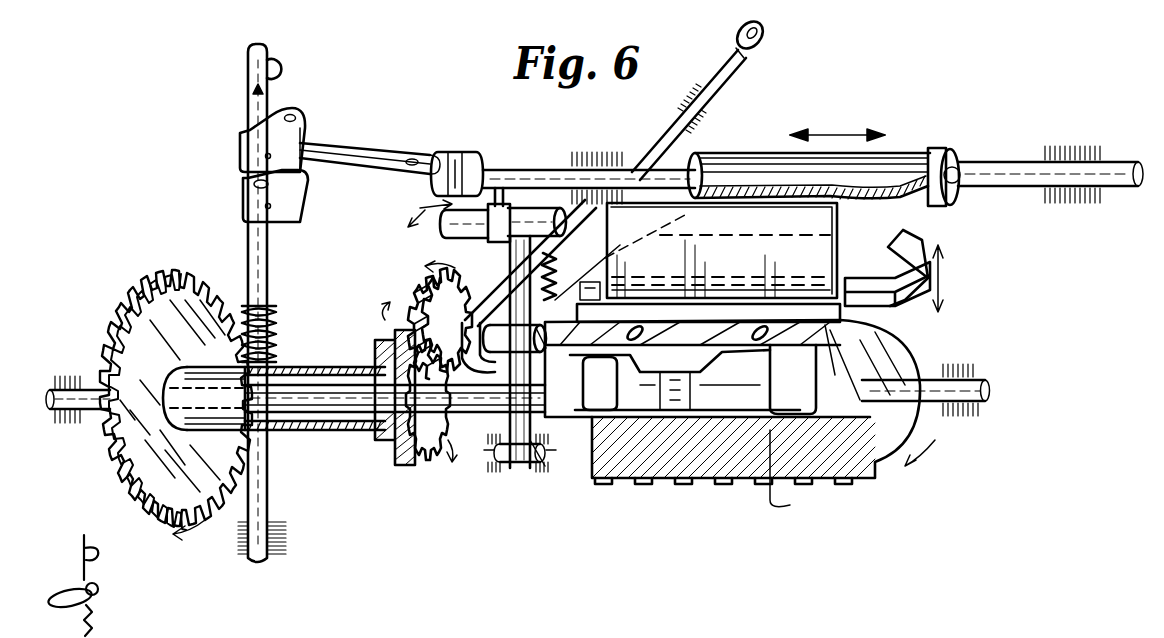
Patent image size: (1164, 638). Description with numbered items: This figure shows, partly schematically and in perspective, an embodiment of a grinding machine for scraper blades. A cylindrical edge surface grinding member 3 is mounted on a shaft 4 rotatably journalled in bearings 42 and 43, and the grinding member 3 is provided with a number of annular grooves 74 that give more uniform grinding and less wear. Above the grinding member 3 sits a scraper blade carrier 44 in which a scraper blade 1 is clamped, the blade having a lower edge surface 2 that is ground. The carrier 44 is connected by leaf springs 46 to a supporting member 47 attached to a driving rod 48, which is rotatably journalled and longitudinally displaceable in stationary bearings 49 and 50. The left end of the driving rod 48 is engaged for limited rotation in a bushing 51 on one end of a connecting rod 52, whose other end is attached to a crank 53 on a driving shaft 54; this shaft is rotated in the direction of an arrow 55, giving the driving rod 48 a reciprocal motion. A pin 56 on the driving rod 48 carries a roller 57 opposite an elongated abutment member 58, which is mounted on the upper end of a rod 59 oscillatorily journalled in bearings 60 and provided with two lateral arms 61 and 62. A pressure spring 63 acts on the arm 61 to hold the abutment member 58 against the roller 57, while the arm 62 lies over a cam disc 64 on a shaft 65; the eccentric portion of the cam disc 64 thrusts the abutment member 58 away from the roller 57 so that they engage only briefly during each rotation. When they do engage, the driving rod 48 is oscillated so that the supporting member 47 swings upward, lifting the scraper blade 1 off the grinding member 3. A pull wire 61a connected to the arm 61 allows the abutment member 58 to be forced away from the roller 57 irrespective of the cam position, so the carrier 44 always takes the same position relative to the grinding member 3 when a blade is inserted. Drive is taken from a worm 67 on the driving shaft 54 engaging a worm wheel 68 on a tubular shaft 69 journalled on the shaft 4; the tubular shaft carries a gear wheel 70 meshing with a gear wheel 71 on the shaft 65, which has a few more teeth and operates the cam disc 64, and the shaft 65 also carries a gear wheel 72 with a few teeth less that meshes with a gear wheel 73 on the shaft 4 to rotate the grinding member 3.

The scraper blade 1 is at (835, 218).
The lower edge surface 2 is at (842, 350).
The cylindrical edge surface grinding member 3 is at (905, 345).
The shaft 4 is at (975, 378).
The bearing 42 is at (965, 416).
The bearing 43 is at (62, 423).
The scraper blade carrier 44 is at (870, 278).
The leaf springs 46 is at (600, 282).
The supporting member 47 is at (930, 255).
The driving rod 48 is at (985, 168).
The stationary bearing 49 is at (1070, 146).
The stationary bearing 50 is at (600, 152).
The bushing 51 is at (465, 152).
The connecting rod 52 is at (375, 148).
The crank 53 is at (306, 125).
The driving shaft 54 is at (270, 100).
The arrow 55 is at (278, 62).
The pin 56 is at (503, 200).
The roller 57 is at (421, 212).
The abutment member 58 is at (540, 200).
The rod 59 is at (545, 440).
The bearings 60 is at (550, 490).
The arm 61 is at (566, 250).
The pull wire 61a is at (704, 82).
The arm 62 is at (505, 280).
The pressure spring 63 is at (560, 268).
The cam disc 64 is at (500, 352).
The shaft 65 is at (515, 353).
The worm 67 is at (278, 325).
The worm wheel 68 is at (182, 282).
The tubular shaft 69 is at (320, 430).
The gear wheel 70 is at (392, 465).
The gear wheel 71 is at (412, 280).
The gear wheel 72 is at (470, 262).
The gear wheel 73 is at (435, 460).
The annular grooves 74 is at (770, 500).